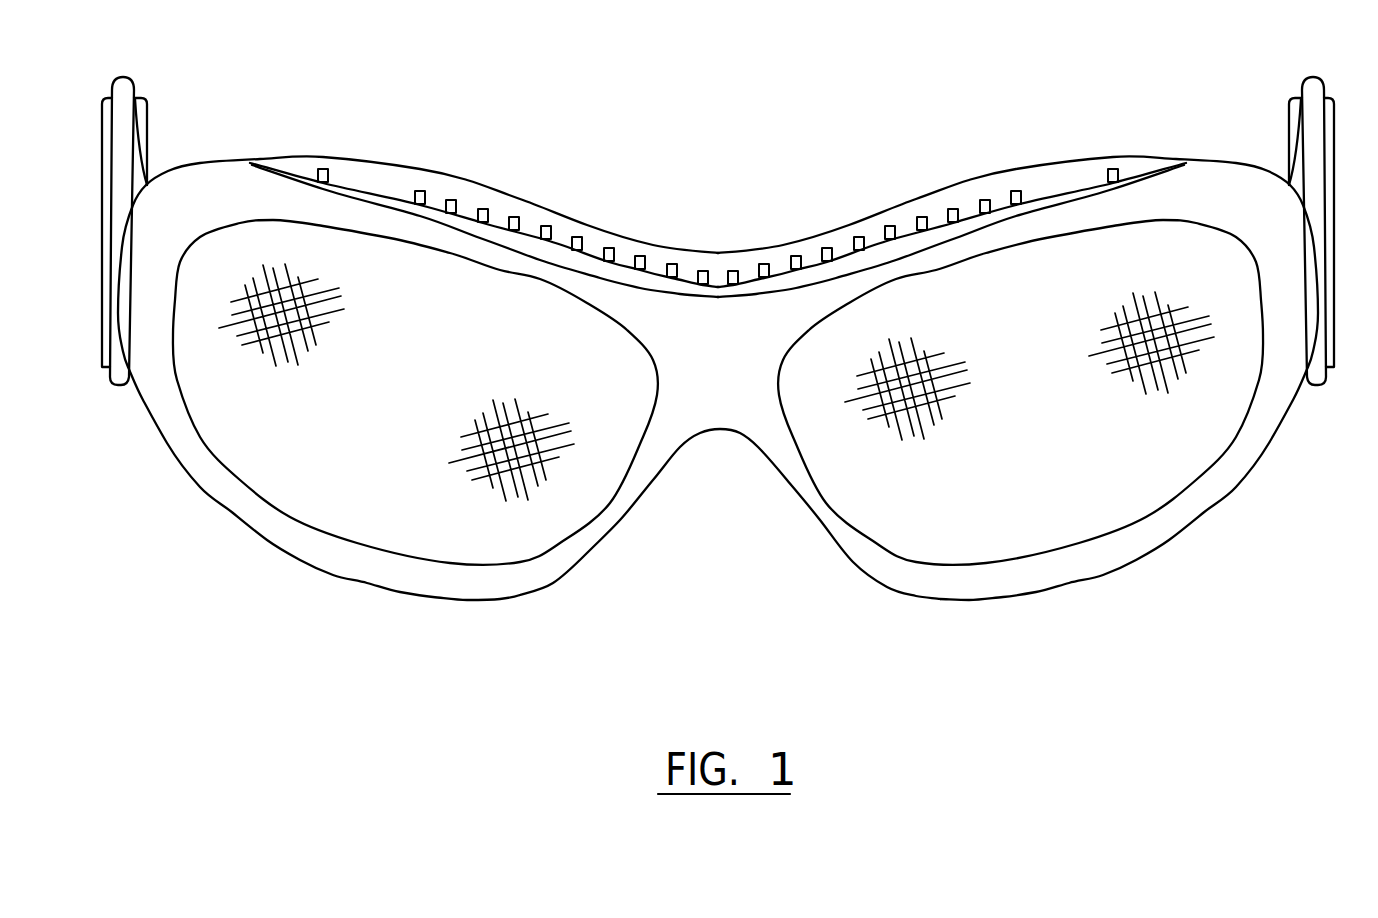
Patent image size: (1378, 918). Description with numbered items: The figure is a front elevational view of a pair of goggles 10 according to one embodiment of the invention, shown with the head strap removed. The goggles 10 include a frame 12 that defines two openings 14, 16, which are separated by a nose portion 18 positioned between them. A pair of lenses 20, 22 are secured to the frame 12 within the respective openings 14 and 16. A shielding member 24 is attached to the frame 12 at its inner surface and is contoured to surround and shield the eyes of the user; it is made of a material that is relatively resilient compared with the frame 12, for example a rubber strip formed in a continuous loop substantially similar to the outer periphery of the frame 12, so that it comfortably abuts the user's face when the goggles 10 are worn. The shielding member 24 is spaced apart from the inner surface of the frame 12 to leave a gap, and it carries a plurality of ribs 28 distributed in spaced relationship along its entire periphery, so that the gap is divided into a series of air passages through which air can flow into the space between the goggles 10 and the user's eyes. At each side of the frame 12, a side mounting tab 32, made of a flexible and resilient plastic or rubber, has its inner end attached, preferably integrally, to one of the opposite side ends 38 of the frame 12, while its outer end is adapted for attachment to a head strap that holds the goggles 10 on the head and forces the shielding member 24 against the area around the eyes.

The goggles 10 is at (701, 190).
The frame 12 is at (199, 193).
The opening 14 is at (333, 540).
The opening 16 is at (852, 520).
The nose portion 18 is at (693, 412).
The lens 20 is at (472, 371).
The lens 22 is at (1057, 371).
The shielding member 24 is at (548, 210).
The ribs 28 is at (823, 248).
The side mounting tab 32 is at (1306, 82).
The side end 38 is at (1268, 203).